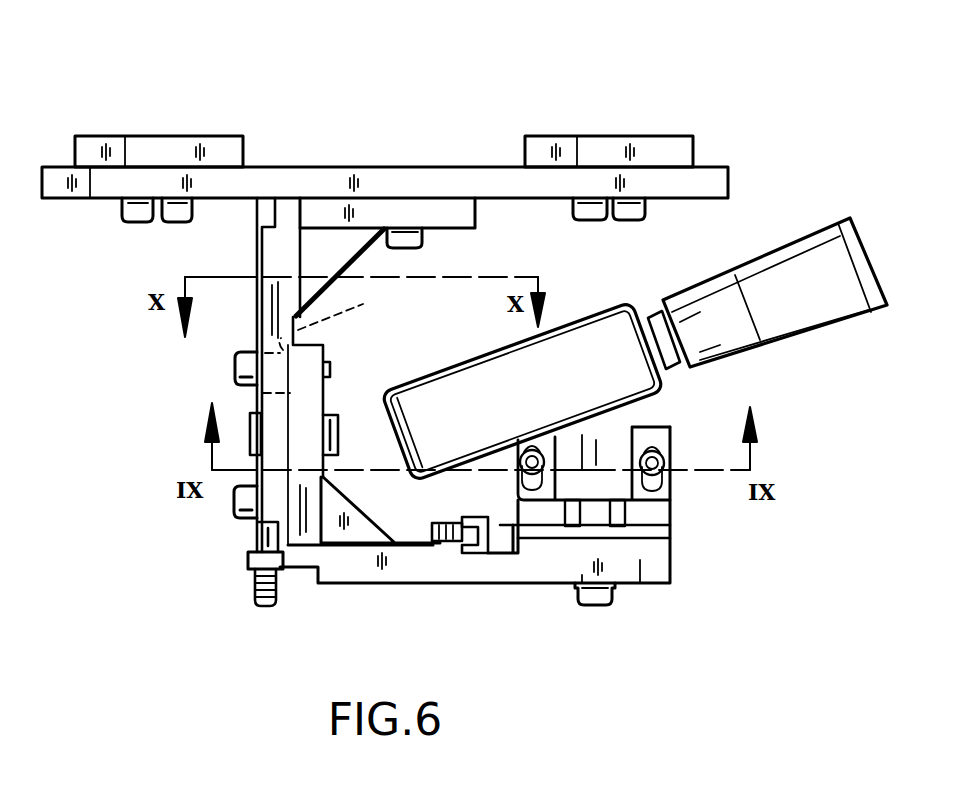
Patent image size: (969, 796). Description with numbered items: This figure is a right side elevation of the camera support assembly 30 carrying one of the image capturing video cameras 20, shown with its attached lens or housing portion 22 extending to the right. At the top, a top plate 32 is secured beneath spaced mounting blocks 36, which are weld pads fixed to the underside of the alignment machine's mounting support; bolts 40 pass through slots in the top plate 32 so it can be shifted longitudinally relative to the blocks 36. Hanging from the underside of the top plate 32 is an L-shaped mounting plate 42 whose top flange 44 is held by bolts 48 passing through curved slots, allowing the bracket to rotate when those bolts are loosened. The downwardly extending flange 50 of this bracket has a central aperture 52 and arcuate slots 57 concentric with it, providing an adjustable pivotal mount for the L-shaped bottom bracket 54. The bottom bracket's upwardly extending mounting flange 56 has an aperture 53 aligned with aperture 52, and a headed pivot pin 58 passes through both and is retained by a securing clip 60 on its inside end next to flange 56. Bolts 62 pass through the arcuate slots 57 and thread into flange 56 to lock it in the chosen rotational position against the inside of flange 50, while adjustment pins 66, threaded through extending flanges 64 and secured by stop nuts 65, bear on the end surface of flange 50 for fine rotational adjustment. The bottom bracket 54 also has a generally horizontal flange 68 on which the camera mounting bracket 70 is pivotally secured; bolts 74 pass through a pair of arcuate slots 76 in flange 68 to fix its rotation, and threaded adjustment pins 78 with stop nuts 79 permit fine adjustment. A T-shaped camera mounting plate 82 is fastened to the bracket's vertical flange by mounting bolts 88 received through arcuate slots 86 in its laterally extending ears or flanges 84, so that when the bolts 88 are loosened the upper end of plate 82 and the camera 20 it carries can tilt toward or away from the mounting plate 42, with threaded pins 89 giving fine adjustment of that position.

The video camera 20 is at (505, 395).
The handle grip 22 is at (782, 296).
The camera support assembly 30 is at (424, 136).
The top plate 32 is at (317, 176).
The mounting blocks 36 is at (168, 148).
The bolts 40 is at (172, 210).
The L-shaped mounting plate 42 is at (236, 250).
The top flange 44 is at (470, 226).
The bolts 48 is at (412, 245).
The downwardly extending flange 50 is at (257, 310).
The central aperture 52 is at (257, 404).
The aperture 53 is at (340, 452).
The L-shaped bottom bracket 54 is at (645, 588).
The mounting flange 56 is at (318, 344).
The arcuate slots 57 is at (263, 645).
The headed pivot pin 58 is at (252, 432).
The securing clip 60 is at (337, 404).
The bolts 62 is at (235, 368).
The extending flanges 64 is at (248, 560).
The stop nuts 65 is at (250, 571).
The adjustment pins 66 is at (260, 540).
The horizontal flange 68 is at (520, 570).
The camera mounting bracket 70 is at (673, 533).
The bolts 74 is at (596, 606).
The arcuate slots 76 is at (582, 584).
The threaded adjustment pins 78 is at (432, 540).
The stop nuts 79 is at (462, 550).
The T-shaped camera mounting plate 82 is at (615, 426).
The ears or flanges 84 is at (520, 488).
The arcuate slot 86 is at (533, 447).
The mounting bolts 88 is at (526, 448).
The threaded pins 89 is at (572, 510).